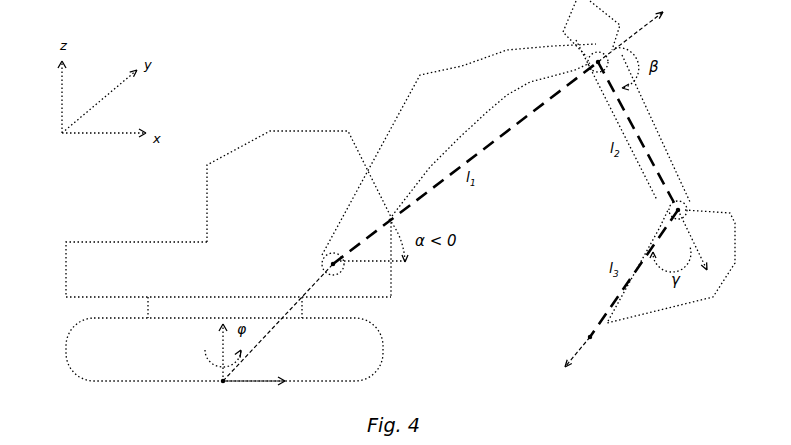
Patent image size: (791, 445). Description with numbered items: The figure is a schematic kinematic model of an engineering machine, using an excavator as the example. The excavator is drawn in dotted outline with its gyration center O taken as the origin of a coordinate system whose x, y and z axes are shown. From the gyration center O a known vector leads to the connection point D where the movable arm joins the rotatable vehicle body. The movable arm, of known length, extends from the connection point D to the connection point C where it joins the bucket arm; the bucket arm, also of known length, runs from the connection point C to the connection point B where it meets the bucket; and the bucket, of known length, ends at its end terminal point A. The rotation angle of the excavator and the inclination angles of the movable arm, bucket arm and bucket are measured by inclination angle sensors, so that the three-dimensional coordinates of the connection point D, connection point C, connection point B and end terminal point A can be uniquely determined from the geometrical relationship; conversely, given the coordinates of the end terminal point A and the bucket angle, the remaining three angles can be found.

The gyration center O is at (210, 373).
The connection point of the movable arm and the rotatable vehicle body D is at (317, 261).
The connection point of the movable arm and the bucket arm C is at (593, 44).
The connection point of the bucket arm and the bucket B is at (688, 199).
The end terminal point of the bucket A is at (576, 341).